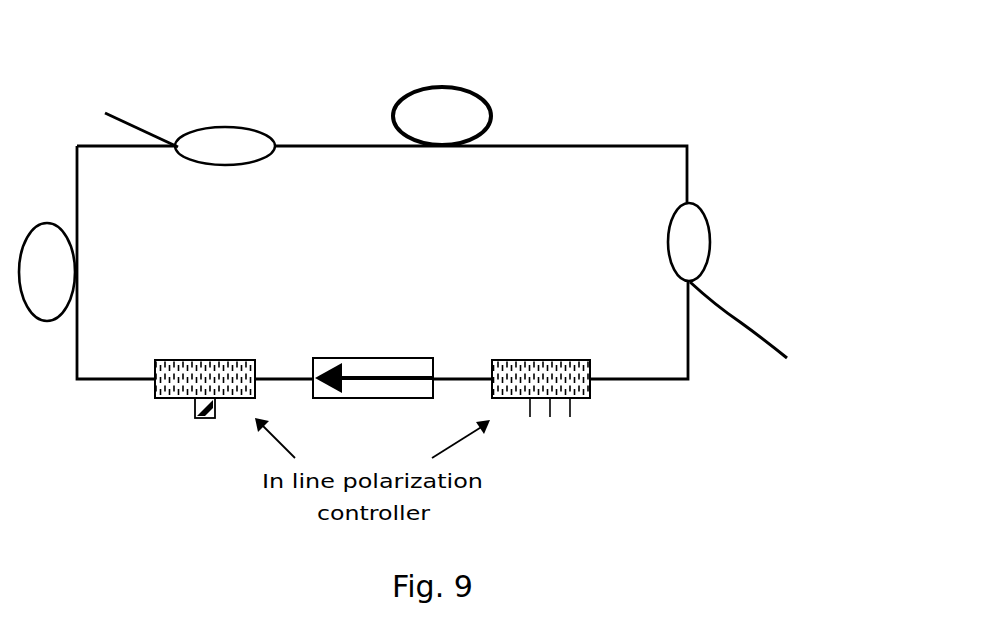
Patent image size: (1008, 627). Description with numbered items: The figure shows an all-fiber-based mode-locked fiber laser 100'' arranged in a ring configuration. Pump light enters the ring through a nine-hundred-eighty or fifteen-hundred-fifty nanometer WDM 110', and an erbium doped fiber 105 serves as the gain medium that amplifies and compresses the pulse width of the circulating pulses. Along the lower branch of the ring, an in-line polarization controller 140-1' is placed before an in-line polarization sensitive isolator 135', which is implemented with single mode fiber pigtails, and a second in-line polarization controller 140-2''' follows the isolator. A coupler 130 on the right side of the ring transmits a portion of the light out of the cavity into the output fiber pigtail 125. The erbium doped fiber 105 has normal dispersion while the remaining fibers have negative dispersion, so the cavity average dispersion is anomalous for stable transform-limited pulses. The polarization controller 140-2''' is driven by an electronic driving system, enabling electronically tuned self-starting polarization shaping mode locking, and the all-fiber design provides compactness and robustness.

The mode-locked fiber laser 100'' is at (414, 194).
The 980 or 1550 nm WDM 110' is at (167, 116).
The erbium doped fiber 105 is at (455, 122).
The coupler 130 is at (692, 228).
The output fiber pigtail 125 is at (738, 320).
The in-line polarization controller 140-1' is at (216, 363).
The in-line polarization sensitive isolator 135' is at (413, 325).
The in-line polarization controller 140-2''' is at (562, 359).